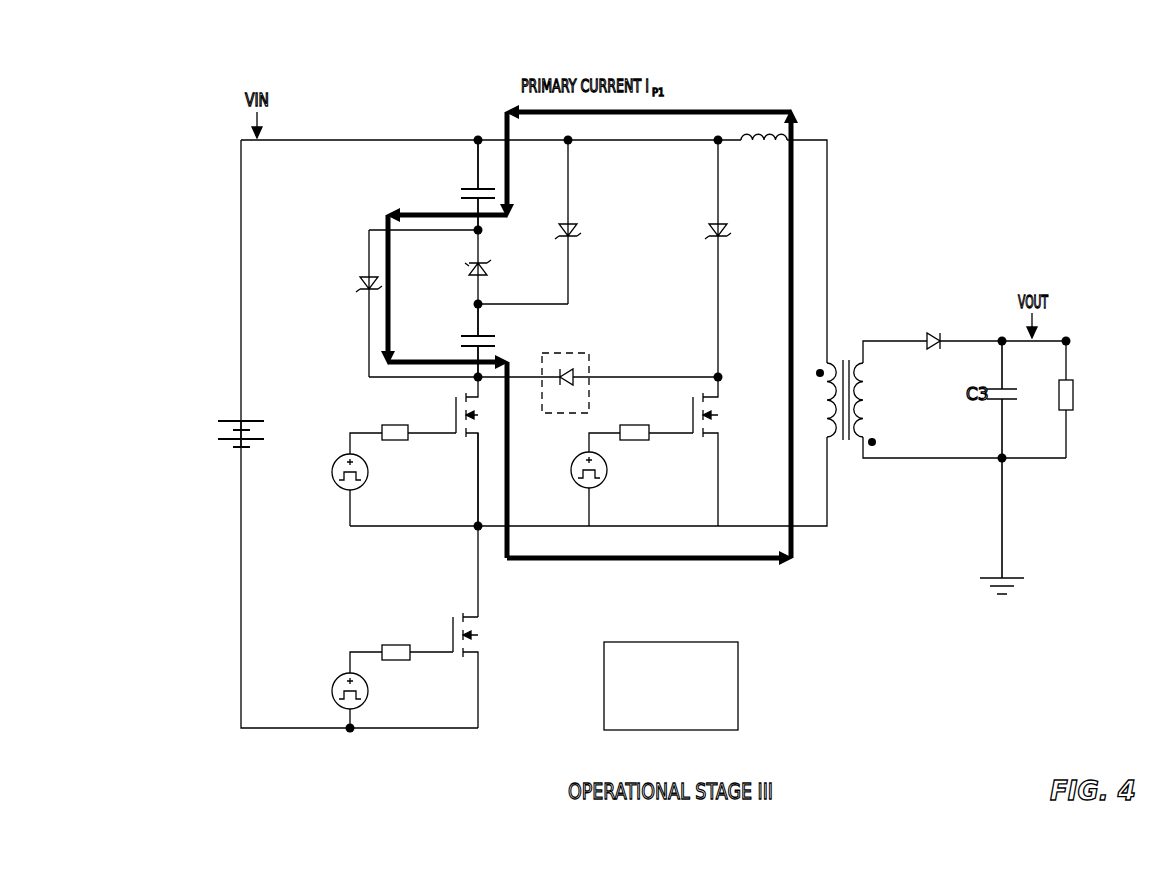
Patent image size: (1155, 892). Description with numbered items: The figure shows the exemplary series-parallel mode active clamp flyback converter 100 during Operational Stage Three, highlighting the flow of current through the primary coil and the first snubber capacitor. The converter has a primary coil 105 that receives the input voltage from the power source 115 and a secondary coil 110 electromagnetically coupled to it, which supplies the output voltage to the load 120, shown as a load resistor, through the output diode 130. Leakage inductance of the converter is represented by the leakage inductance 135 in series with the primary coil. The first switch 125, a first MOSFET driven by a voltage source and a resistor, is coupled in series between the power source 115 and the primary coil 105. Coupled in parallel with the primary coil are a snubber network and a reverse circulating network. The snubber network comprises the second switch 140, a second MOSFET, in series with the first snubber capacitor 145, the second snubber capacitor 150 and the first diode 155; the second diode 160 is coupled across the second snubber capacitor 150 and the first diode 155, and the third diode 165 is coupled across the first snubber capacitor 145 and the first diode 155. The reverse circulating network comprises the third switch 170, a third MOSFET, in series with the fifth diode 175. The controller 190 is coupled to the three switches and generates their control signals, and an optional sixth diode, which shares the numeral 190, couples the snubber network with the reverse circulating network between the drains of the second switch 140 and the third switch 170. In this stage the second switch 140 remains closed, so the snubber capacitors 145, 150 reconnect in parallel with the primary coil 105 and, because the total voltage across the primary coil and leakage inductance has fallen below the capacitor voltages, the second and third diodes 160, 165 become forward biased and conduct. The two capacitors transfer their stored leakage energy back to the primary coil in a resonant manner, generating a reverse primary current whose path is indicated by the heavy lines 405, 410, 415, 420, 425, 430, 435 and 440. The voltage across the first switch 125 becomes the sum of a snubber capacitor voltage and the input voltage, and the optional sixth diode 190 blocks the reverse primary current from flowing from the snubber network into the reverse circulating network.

The flyback converter 100 is at (157, 70).
The primary coil P1 105 is at (825, 417).
The secondary coil S1 110 is at (862, 425).
The power source 115 is at (228, 417).
The load 120 is at (1095, 378).
The switch Q1 125 is at (452, 643).
The diode D4 130 is at (923, 348).
The leakage inductance L1 135 is at (750, 145).
The switch Q3 140 is at (453, 418).
The snubber capacitor C1 145 is at (468, 187).
The snubber capacitor C2 150 is at (468, 330).
The diode D1 155 is at (468, 258).
The diode D2 160 is at (362, 279).
The diode D3 165 is at (574, 226).
The switch Q2 170 is at (690, 418).
The diode D5 175 is at (713, 226).
The controller 190 is at (558, 352).
The reverse primary current line 405 is at (750, 108).
The reverse primary current line 410 is at (787, 303).
The reverse primary current line 415 is at (615, 561).
The reverse primary current line 420 is at (513, 470).
The reverse primary current line 425 is at (433, 364).
The reverse primary current line 430 is at (391, 306).
The reverse primary current line 435 is at (404, 209).
The reverse primary current line 440 is at (511, 196).